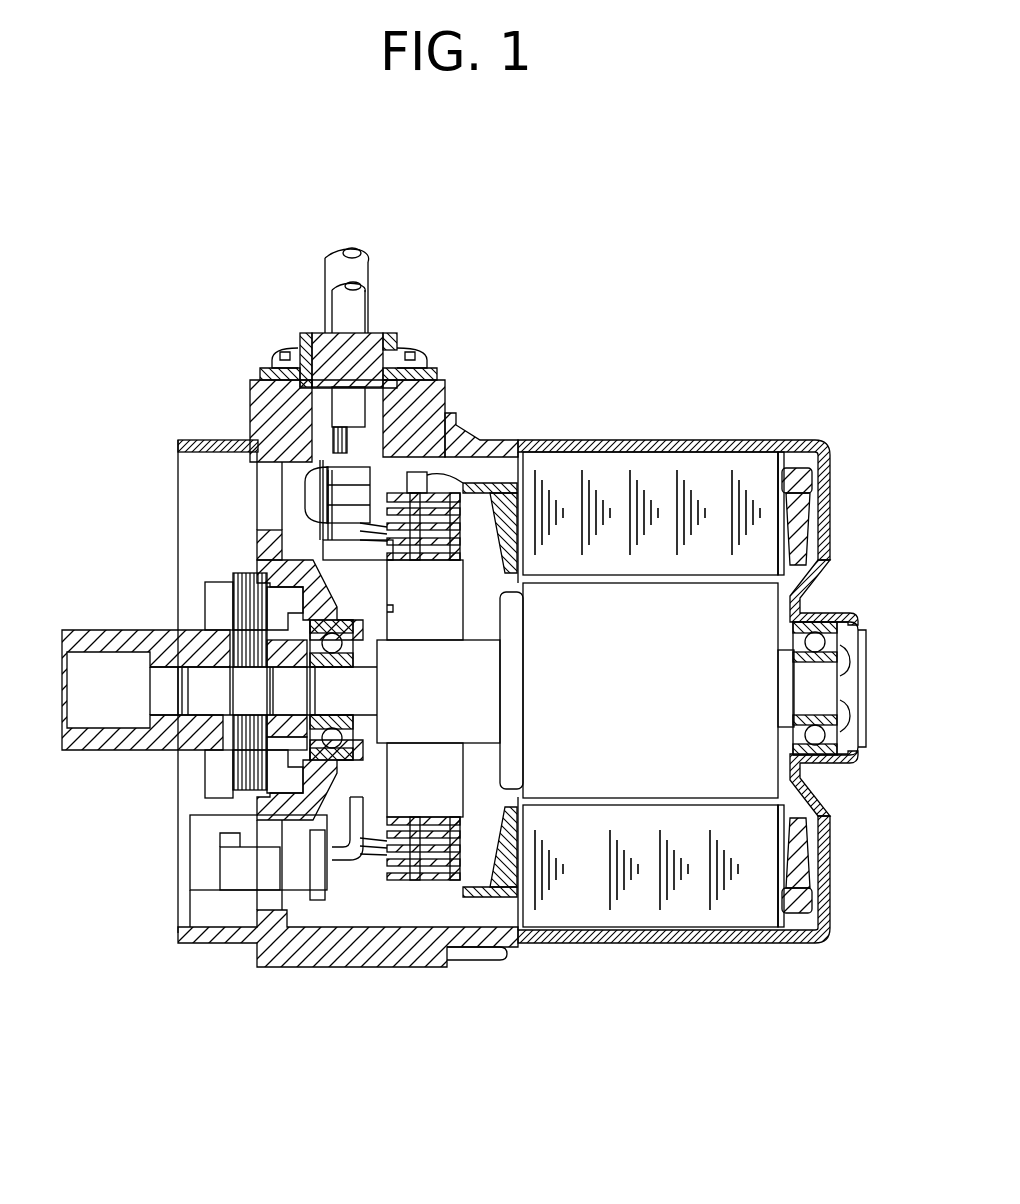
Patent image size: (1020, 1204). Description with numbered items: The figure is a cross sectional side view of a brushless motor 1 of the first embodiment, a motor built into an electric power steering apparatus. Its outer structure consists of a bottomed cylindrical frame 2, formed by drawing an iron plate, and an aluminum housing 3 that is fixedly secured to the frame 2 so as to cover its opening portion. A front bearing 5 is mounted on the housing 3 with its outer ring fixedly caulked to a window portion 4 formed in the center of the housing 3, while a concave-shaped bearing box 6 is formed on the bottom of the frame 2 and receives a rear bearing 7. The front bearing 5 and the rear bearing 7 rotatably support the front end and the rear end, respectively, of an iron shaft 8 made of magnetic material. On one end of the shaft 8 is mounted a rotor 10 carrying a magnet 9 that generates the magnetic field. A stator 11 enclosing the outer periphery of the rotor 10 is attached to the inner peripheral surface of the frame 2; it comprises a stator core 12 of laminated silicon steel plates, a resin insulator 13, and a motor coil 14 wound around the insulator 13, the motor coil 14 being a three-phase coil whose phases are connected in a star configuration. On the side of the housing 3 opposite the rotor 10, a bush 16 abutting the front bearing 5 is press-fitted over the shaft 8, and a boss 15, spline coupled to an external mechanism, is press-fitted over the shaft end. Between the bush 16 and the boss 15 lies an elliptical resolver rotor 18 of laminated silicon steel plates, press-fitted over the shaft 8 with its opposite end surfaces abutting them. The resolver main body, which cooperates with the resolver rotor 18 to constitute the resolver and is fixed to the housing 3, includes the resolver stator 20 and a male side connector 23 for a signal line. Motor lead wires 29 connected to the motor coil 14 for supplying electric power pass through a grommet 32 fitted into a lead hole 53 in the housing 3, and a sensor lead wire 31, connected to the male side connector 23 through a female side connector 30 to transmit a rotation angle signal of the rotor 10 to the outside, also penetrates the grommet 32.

The brushless motor 1 is at (479, 639).
The frame 2 is at (680, 942).
The housing 3 is at (393, 955).
The window portion 4 is at (330, 840).
The front bearing 5 is at (215, 775).
The bearing box 6 is at (830, 618).
The rear bearing 7 is at (822, 757).
The shaft 8 is at (203, 697).
The magnet 9 is at (677, 610).
The rotor 10 is at (594, 747).
The stator 11 is at (716, 885).
The stator core 12 is at (652, 885).
The insulator 13 is at (798, 900).
The motor coil 14 is at (800, 525).
The boss 15 is at (100, 630).
The bush 16 is at (293, 800).
The resolver rotor 18 is at (247, 648).
The resolver stator 20 is at (273, 760).
The male side connector 23 is at (280, 873).
The motor lead wires 29 is at (355, 310).
The female side connector 30 is at (323, 862).
The sensor lead wire 31 is at (355, 268).
The grommet 32 is at (313, 333).
The lead hole 53 is at (372, 335).